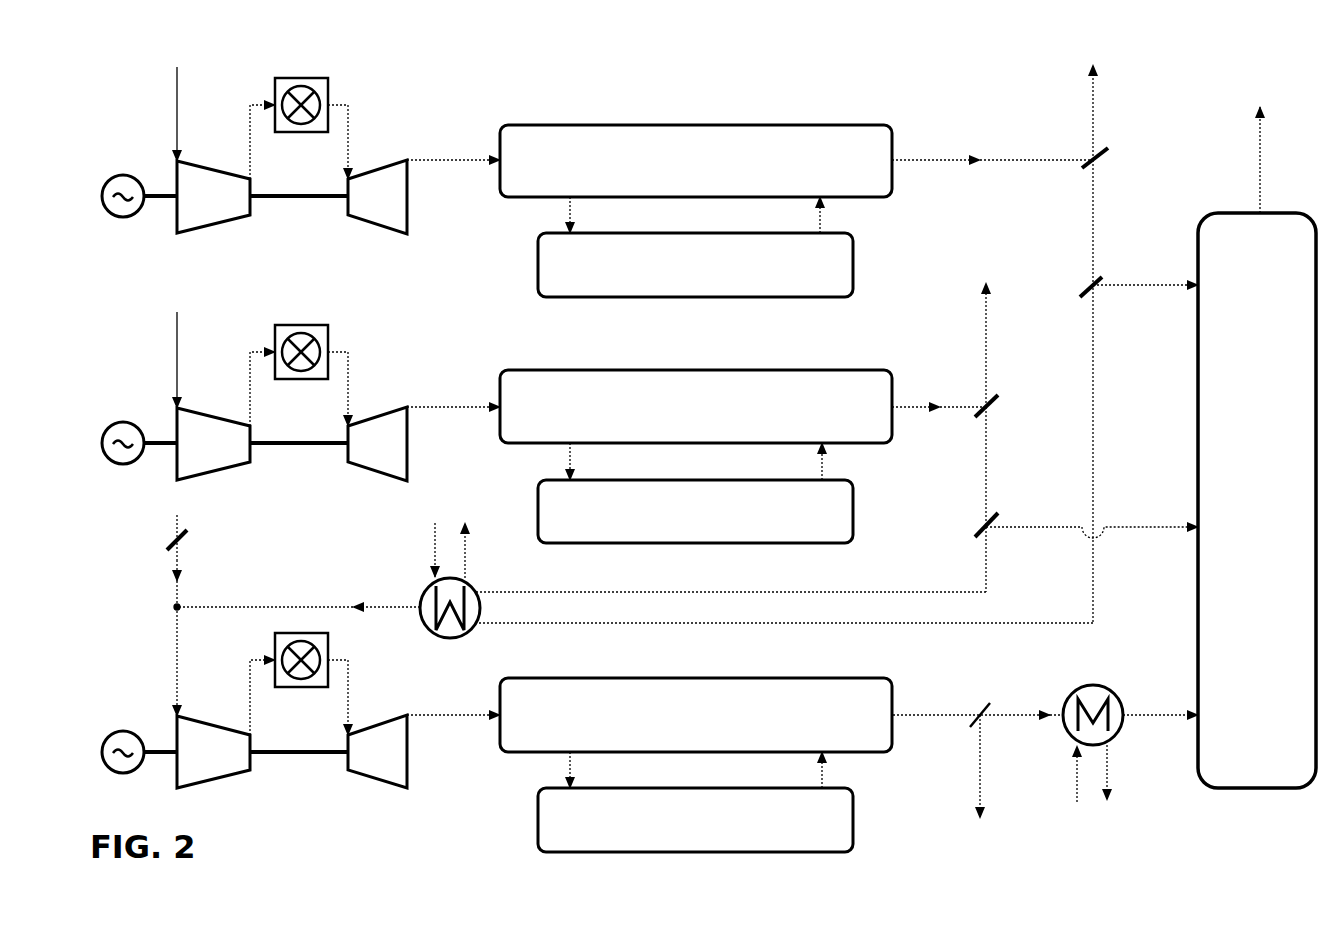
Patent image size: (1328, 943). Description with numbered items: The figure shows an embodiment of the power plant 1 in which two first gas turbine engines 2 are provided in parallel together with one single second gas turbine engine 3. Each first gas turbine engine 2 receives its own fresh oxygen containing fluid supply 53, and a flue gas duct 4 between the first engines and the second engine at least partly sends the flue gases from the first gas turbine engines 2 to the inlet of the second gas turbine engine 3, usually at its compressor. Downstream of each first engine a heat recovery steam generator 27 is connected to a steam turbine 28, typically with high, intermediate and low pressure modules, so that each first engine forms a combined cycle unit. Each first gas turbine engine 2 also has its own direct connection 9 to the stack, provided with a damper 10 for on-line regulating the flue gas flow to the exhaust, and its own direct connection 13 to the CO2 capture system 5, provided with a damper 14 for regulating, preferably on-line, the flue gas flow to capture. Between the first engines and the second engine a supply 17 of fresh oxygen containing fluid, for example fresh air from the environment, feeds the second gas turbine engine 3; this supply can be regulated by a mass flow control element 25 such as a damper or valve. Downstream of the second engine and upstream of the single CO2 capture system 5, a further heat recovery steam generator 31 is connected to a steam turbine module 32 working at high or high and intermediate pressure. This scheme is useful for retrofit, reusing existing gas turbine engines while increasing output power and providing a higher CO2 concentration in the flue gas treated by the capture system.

The power plant 1 is at (663, 110).
The first gas turbine engine 2 is at (297, 227).
The second gas turbine engine 3 is at (297, 783).
The flue gas duct 4 is at (962, 620).
The CO2 capture system 5 is at (1249, 408).
The direct connection 9 is at (1095, 107).
The damper 10 is at (1108, 148).
The direct connection 13 is at (1150, 285).
The damper 14 is at (1083, 285).
The supply of fresh oxygen containing fluid 17 is at (175, 563).
The mass flow control element 25 is at (173, 545).
The heat recovery steam generator 27 is at (679, 172).
The steam turbine 28 is at (678, 277).
The heat recovery steam generator 31 is at (679, 728).
The high pressure or high and intermediate pressure module 32 is at (678, 835).
The fresh oxygen containing fluid supply 53 is at (172, 102).